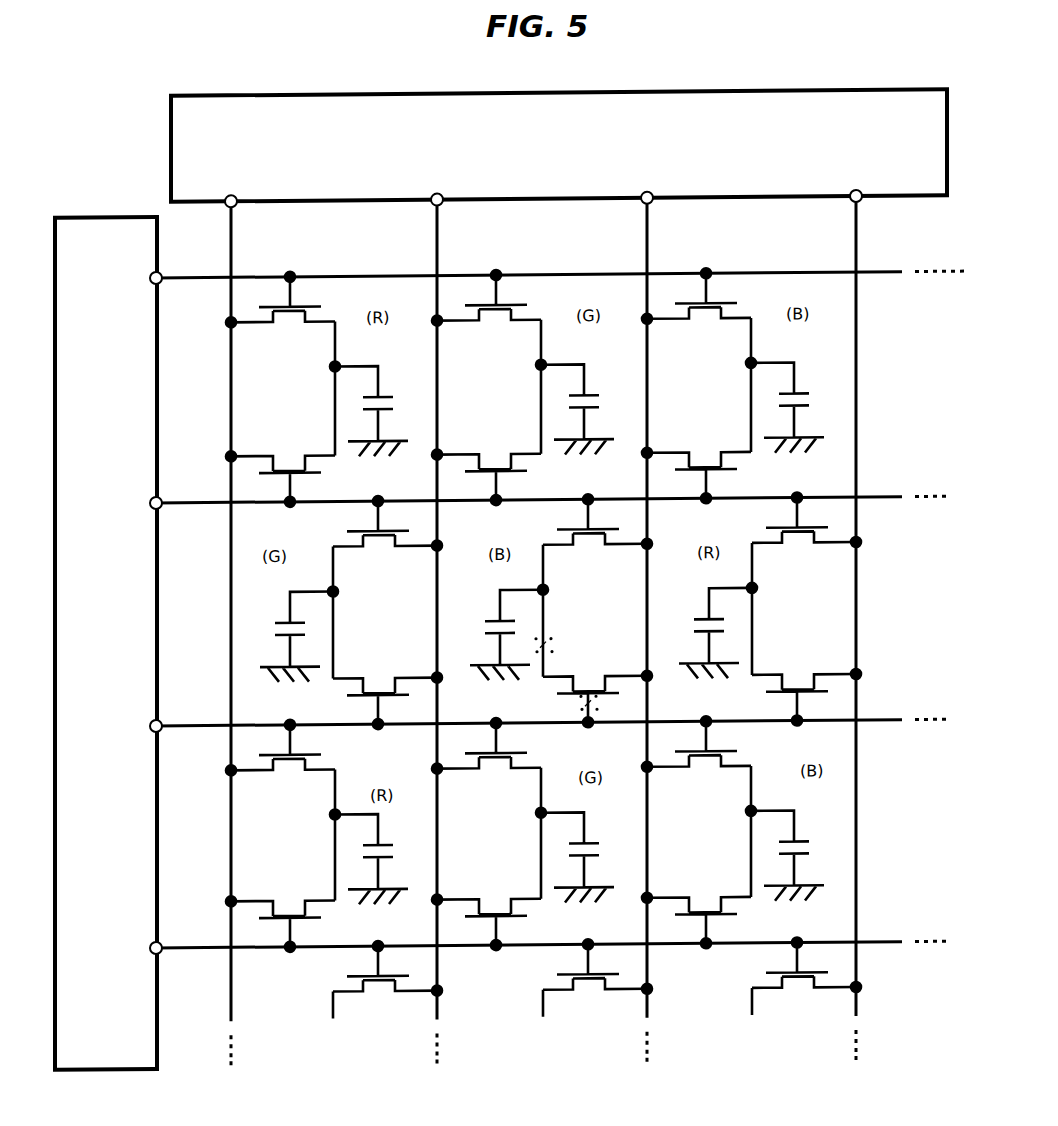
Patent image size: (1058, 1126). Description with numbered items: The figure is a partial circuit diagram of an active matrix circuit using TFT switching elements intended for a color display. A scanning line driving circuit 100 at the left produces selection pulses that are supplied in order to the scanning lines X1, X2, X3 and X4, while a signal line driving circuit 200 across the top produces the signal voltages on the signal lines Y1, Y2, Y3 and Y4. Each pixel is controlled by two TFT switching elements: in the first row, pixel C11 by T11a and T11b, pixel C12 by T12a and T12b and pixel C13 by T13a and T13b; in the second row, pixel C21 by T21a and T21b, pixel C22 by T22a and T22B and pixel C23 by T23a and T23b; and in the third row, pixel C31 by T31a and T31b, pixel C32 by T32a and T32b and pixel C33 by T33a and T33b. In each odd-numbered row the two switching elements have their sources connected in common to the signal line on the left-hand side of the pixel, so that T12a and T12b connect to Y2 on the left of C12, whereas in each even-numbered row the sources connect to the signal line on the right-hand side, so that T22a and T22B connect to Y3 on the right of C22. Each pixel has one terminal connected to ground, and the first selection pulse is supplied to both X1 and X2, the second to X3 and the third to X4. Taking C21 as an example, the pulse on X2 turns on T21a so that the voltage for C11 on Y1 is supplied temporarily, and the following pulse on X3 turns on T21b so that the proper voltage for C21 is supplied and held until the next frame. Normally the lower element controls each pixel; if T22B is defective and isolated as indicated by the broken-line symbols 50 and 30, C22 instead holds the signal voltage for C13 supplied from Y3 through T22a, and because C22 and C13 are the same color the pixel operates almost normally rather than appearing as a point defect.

The scanning line driving circuit 100 is at (110, 217).
The signal line driving circuit 200 is at (170, 174).
The scanning line X1 is at (203, 281).
The scanning line X2 is at (203, 506).
The scanning line X3 is at (203, 729).
The scanning line X4 is at (214, 951).
The signal line Y1 is at (236, 250).
The signal line Y2 is at (441, 247).
The signal line Y3 is at (651, 257).
The signal line Y4 is at (860, 254).
The TFT switching element T11a is at (300, 307).
The TFT switching element T12a is at (507, 307).
The TFT switching element T13a is at (718, 307).
The TFT switching element T21a is at (366, 533).
The TFT switching element T22a is at (575, 533).
The TFT switching element T23a is at (784, 533).
The TFT switching element T31a is at (305, 757).
The TFT switching element T32a is at (513, 757).
The TFT switching element T33a is at (722, 757).
The TFT switching element T11b is at (303, 477).
The TFT switching element T12b is at (511, 477).
The TFT switching element T13b is at (722, 477).
The TFT switching element T21b is at (361, 697).
The TFT switching element T22B is at (572, 697).
The TFT switching element T23b is at (784, 697).
The TFT switching element T31b is at (310, 912).
The TFT switching element T32b is at (516, 912).
The TFT switching element T33b is at (722, 912).
The pixel C11 is at (382, 401).
The pixel C12 is at (590, 409).
The pixel C13 is at (800, 401).
The pixel C21 is at (286, 624).
The pixel C22 is at (493, 624).
The pixel C23 is at (704, 624).
The pixel C31 is at (385, 847).
The pixel C32 is at (592, 849).
The pixel C33 is at (800, 849).
The broken line symbol 30 is at (548, 651).
The broken line symbol 50 is at (591, 708).